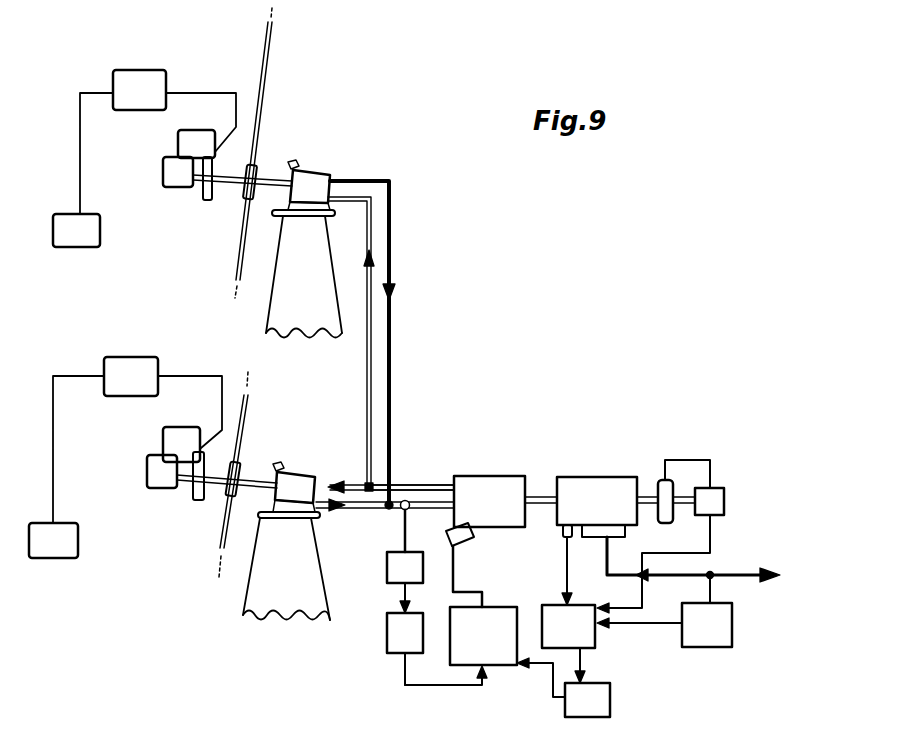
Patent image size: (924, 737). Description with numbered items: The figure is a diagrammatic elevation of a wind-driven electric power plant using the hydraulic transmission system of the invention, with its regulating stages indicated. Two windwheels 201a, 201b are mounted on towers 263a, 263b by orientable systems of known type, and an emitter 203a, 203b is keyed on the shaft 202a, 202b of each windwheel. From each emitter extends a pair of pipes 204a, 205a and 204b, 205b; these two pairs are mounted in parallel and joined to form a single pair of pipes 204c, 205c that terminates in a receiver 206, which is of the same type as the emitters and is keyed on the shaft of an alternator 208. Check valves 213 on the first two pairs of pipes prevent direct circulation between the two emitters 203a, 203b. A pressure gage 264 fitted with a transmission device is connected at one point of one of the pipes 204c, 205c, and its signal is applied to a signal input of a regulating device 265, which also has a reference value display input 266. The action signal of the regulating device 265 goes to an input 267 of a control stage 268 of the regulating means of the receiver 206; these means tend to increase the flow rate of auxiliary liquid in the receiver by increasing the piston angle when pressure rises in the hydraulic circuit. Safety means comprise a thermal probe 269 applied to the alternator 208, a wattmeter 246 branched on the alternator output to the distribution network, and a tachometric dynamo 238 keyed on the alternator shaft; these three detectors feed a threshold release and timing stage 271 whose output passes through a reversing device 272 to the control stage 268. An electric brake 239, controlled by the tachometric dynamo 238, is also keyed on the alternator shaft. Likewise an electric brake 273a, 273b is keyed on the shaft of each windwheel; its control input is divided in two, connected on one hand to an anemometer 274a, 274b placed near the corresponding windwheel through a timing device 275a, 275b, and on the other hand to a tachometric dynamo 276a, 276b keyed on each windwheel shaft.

The windwheel 201a is at (268, 62).
The shaft of windwheel 202a is at (262, 163).
The emitter 203a is at (316, 186).
The pipe 204a is at (394, 213).
The check valves 213 is at (392, 296).
The pipe 205a is at (372, 334).
The tower 263a is at (305, 336).
The timing device 275a is at (143, 77).
The tachometric dynamo 276a is at (163, 173).
The electric brake 273a is at (207, 200).
The anemometer 274a is at (78, 248).
The timing device 275b is at (136, 359).
The tachometric dynamo 276b is at (147, 470).
The electric brake 273b is at (197, 502).
The anemometer 274b is at (52, 559).
The windwheel 201b is at (230, 545).
The shaft of windwheel 202b is at (256, 478).
The emitter 203b is at (296, 478).
The pipe 205b is at (330, 480).
The pipe 205c is at (400, 483).
The pipe 204b is at (353, 510).
The pipe 204c is at (421, 503).
The tower 263b is at (265, 613).
The receiver 206 is at (490, 483).
The alternator 208 is at (588, 488).
The electric brake 239 is at (659, 480).
The tachometric dynamo 238 is at (717, 500).
The thermal probe 269 is at (560, 534).
The control stage 268 is at (516, 588).
The pressure gage 264 is at (387, 561).
The regulating device 265 is at (398, 608).
The reference value display input 266 is at (382, 635).
The input 267 is at (484, 668).
The threshold release and timing stage 271 is at (586, 630).
The reversing device 272 is at (603, 697).
The wattmeter 246 is at (730, 618).